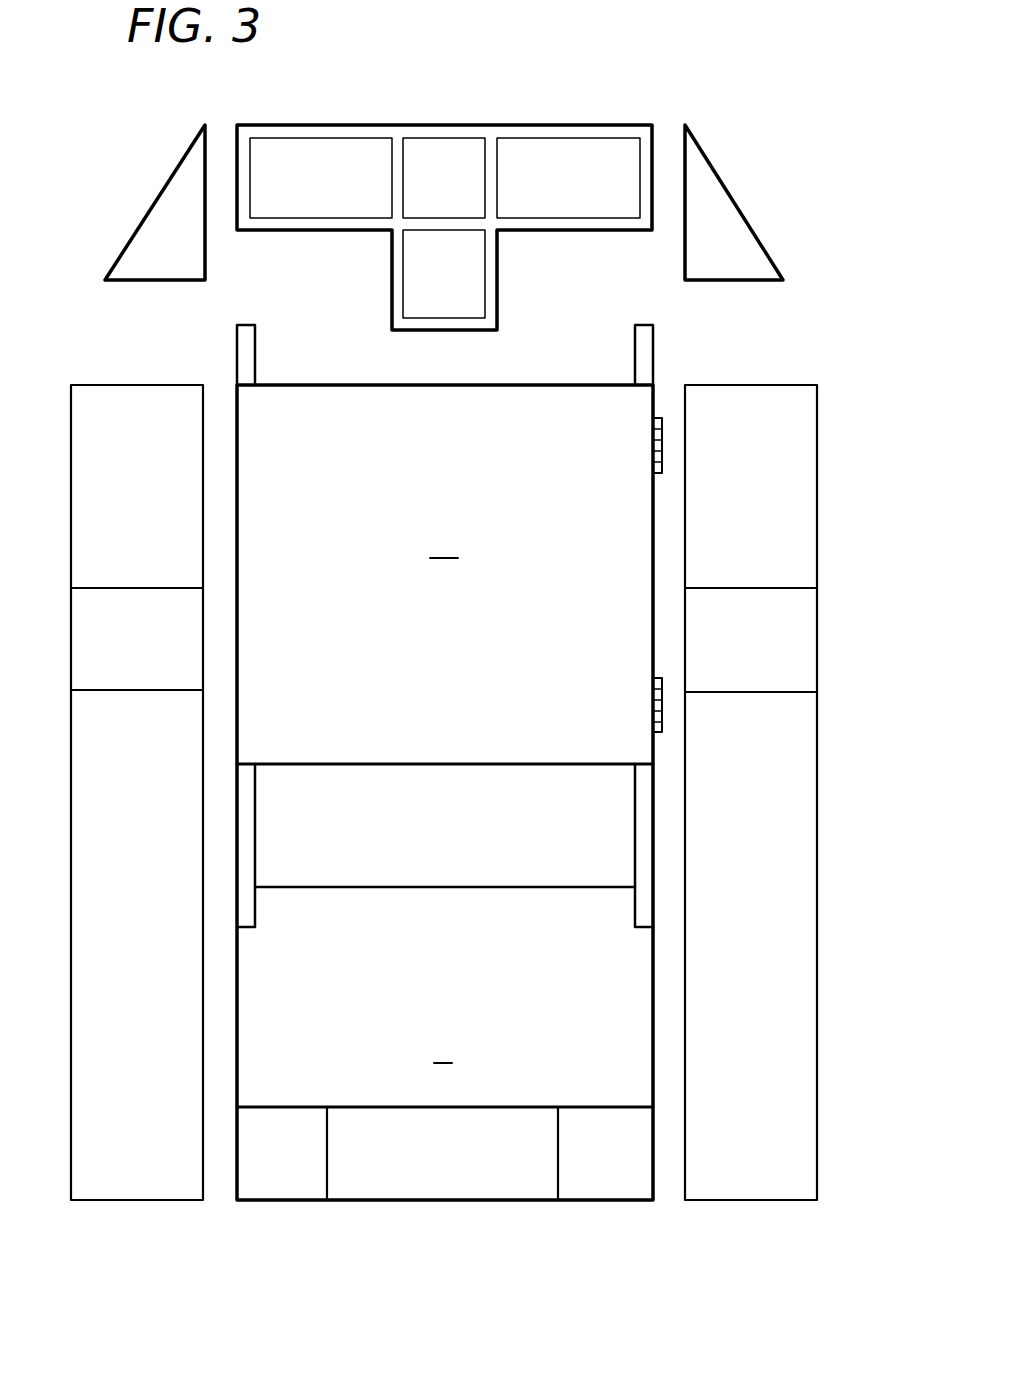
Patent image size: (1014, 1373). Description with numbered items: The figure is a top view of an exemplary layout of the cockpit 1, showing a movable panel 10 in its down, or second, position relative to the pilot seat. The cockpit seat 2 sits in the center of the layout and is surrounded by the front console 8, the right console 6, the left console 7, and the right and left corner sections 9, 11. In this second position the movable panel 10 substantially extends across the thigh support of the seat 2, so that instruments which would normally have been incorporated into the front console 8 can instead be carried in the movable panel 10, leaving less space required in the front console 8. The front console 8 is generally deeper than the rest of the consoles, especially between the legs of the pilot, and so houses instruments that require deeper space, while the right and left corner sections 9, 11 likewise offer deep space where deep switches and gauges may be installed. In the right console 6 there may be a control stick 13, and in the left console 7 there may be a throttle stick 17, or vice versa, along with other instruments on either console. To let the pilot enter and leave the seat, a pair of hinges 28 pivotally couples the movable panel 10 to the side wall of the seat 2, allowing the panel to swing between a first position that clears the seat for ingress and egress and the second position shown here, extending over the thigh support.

The cockpit 1 is at (755, 1230).
The cockpit seat 2 is at (445, 1118).
The right console 6 is at (771, 482).
The left console 7 is at (118, 493).
The front console 8 is at (551, 125).
The right corner section 9 is at (714, 224).
The movable panel 10 is at (445, 762).
The left corner section 11 is at (174, 230).
The control stick 13 is at (780, 656).
The throttle stick 17 is at (113, 624).
The hinges 28 is at (662, 446).